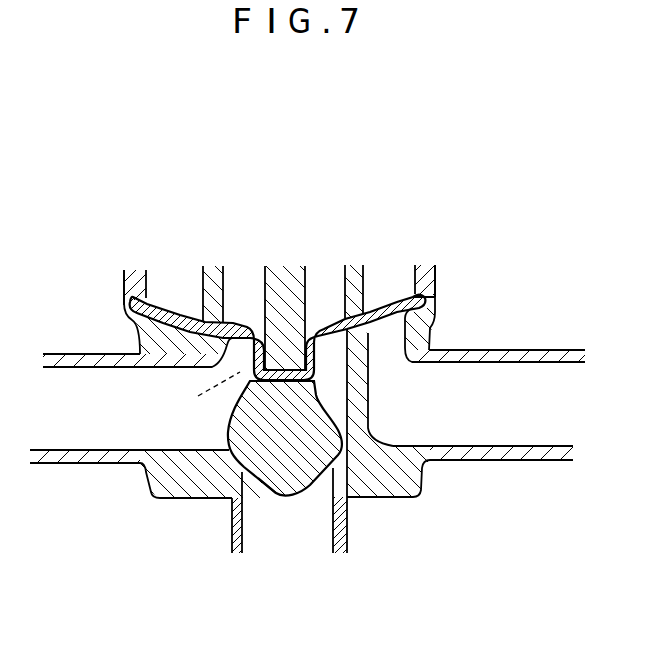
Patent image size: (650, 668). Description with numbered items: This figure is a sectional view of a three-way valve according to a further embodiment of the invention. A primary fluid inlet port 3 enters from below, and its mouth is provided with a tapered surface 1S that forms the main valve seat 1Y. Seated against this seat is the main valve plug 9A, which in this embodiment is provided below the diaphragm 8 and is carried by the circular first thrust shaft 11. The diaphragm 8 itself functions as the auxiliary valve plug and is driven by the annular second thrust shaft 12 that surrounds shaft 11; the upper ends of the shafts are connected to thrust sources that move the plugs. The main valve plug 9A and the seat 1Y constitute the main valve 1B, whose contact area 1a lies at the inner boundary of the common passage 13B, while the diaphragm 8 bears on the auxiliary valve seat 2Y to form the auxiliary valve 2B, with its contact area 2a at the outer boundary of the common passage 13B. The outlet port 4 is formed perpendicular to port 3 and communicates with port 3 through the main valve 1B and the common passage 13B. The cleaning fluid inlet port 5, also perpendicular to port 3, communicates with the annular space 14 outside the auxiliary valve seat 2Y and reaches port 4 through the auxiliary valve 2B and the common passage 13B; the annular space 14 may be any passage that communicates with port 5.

The annular space 14 is at (177, 340).
The contact area of the auxiliary valve plug with the auxiliary valve seat 2a is at (223, 322).
The diaphragm 8 is at (245, 322).
The thrust shaft 11 is at (282, 293).
The thrust shaft 12 is at (354, 265).
The auxiliary valve 2B is at (375, 307).
The auxiliary valve seat 2Y is at (213, 367).
The common passage 13B is at (370, 420).
The port 3 is at (283, 548).
The main valve plug 9A is at (257, 498).
The port 4 is at (88, 434).
The main valve 1B is at (156, 499).
The tapered surface 1S is at (197, 499).
The contact area of the main valve plug with the main valve seat 1a is at (393, 497).
The port 5 is at (502, 430).
The main valve seat 1Y is at (310, 470).